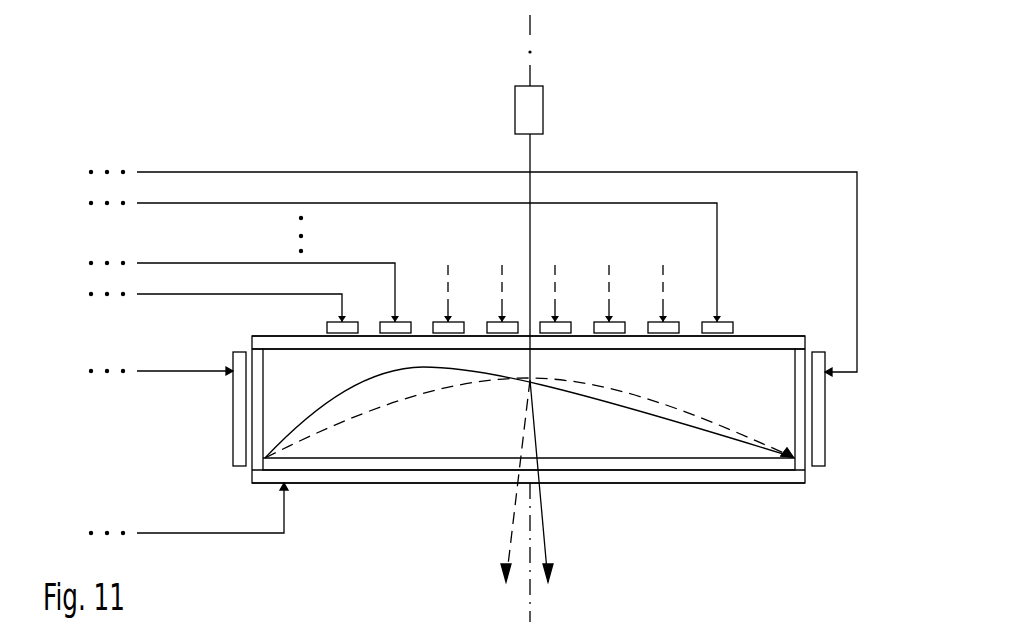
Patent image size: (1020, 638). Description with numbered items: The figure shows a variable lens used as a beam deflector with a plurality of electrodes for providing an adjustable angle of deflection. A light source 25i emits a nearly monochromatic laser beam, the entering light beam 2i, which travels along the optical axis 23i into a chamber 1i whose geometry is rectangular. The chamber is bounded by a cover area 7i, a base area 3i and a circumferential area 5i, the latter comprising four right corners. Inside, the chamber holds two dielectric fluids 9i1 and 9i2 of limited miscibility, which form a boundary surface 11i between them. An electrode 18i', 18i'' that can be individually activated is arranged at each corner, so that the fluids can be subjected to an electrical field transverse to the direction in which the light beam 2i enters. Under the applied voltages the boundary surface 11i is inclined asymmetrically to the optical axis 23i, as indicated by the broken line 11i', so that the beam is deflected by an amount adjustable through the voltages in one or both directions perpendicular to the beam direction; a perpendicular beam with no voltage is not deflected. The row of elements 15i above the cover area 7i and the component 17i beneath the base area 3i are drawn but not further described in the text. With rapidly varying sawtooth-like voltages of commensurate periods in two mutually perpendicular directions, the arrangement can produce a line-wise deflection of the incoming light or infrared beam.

The chamber 1i is at (407, 493).
The light beam 2i is at (533, 157).
The base area 3i is at (618, 470).
The circumferential area 5i is at (801, 483).
The cover area 7i is at (770, 343).
The first dielectric fluid 9i1 is at (751, 393).
The second dielectric fluid 9i2 is at (604, 440).
The boundary surface 11i is at (529, 474).
The inclined boundary surface 11i' is at (529, 480).
The transducers 15i is at (603, 322).
The bottom plate 17i is at (340, 485).
The electrode 18i' is at (167, 409).
The electrode 18i'' is at (473, 318).
The optical axis 23i is at (533, 29).
The light source 25i is at (545, 108).